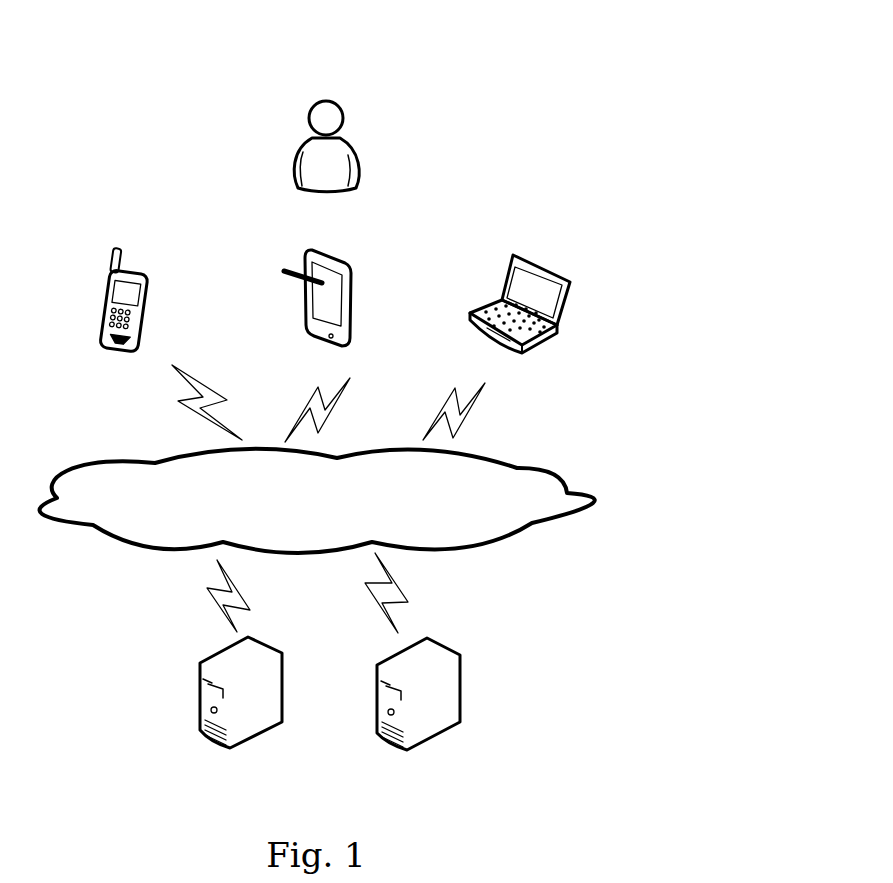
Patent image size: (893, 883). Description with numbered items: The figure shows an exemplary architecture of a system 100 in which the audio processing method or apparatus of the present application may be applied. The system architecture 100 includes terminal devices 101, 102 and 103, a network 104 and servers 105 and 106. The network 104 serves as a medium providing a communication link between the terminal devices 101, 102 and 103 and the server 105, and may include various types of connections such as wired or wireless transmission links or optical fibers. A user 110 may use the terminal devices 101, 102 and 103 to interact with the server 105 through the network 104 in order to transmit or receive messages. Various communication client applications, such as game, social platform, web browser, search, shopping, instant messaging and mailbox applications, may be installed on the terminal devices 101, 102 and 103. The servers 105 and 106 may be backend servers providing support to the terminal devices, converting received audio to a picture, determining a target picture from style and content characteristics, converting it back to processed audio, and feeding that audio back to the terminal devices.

The system architecture 100 is at (527, 38).
The user 110 is at (326, 159).
The terminal device 101 is at (126, 316).
The terminal device 102 is at (317, 317).
The terminal device 103 is at (520, 322).
The network 104 is at (317, 501).
The server 105 is at (241, 710).
The server 106 is at (418, 710).